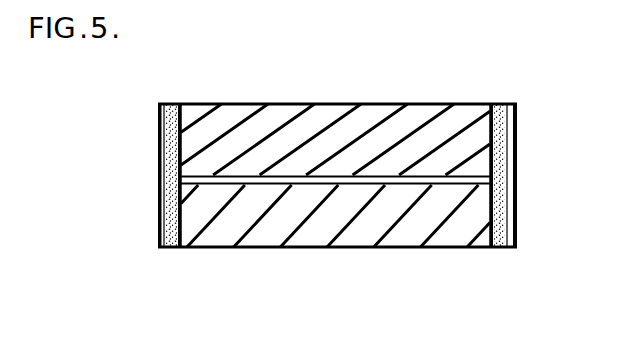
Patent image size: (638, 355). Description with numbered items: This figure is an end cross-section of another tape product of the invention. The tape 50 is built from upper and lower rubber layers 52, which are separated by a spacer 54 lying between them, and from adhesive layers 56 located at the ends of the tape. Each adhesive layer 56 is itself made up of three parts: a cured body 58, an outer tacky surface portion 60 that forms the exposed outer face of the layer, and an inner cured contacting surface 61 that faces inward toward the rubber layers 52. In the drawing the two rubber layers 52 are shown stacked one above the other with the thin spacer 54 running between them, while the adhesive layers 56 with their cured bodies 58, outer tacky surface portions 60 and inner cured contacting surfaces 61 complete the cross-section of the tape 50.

The tape 50 is at (533, 246).
The upper and lower rubber layers 52 is at (318, 115).
The spacer 54 is at (388, 177).
The adhesive layers 56 is at (168, 105).
The cured body 58 is at (178, 249).
The outer tacky surface portion 60 is at (160, 222).
The inner cured contacting surface 61 is at (176, 131).